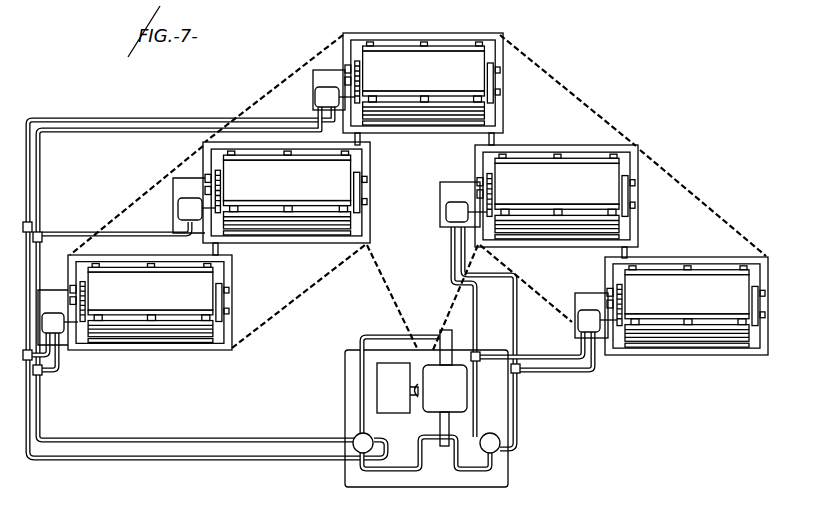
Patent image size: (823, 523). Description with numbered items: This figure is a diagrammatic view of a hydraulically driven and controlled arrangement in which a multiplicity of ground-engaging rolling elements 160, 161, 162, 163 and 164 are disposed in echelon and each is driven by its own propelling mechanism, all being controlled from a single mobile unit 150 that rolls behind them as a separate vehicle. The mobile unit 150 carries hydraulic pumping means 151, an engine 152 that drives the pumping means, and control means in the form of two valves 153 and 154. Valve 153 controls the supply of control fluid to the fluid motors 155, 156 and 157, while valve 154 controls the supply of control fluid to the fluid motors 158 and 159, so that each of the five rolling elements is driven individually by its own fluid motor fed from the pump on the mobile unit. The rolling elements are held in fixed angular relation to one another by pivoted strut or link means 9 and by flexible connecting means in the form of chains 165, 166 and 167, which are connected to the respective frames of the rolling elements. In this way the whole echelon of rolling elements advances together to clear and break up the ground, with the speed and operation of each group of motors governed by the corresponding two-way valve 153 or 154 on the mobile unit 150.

The pivoted strut or link means 9 is at (360, 142).
The mobile unit 150 is at (502, 472).
The hydraulic pumping means 151 is at (460, 395).
The engine 152 is at (382, 392).
The valve 153 is at (353, 438).
The valve 154 is at (500, 447).
The fluid motor 155 is at (62, 336).
The fluid motor 156 is at (180, 207).
The fluid motor 157 is at (328, 93).
The fluid motor 158 is at (585, 315).
The fluid motor 159 is at (448, 210).
The rolling element 160 is at (198, 338).
The rolling element 161 is at (316, 208).
The rolling element 162 is at (457, 62).
The rolling element 163 is at (567, 176).
The rolling element 164 is at (703, 323).
The chain 165 is at (716, 217).
The chain 166 is at (388, 292).
The chain 167 is at (258, 103).